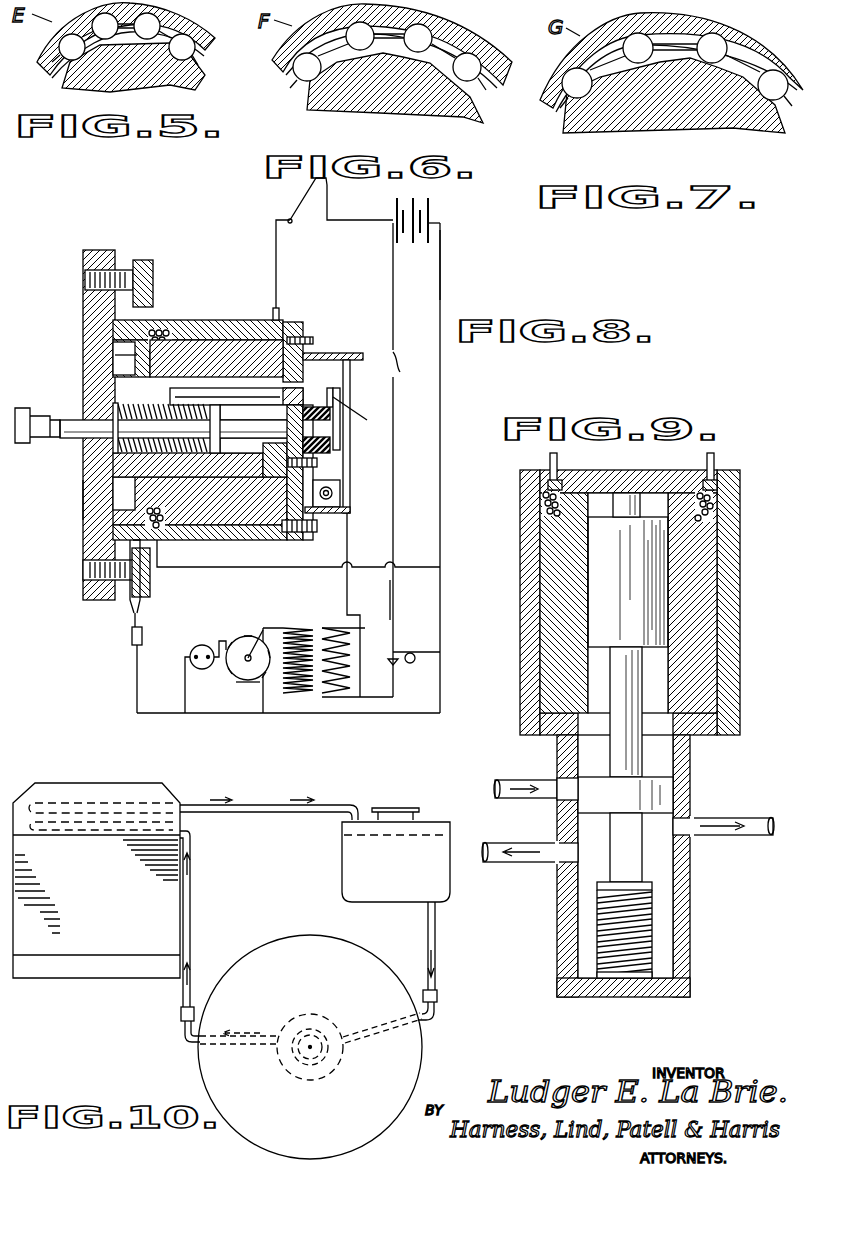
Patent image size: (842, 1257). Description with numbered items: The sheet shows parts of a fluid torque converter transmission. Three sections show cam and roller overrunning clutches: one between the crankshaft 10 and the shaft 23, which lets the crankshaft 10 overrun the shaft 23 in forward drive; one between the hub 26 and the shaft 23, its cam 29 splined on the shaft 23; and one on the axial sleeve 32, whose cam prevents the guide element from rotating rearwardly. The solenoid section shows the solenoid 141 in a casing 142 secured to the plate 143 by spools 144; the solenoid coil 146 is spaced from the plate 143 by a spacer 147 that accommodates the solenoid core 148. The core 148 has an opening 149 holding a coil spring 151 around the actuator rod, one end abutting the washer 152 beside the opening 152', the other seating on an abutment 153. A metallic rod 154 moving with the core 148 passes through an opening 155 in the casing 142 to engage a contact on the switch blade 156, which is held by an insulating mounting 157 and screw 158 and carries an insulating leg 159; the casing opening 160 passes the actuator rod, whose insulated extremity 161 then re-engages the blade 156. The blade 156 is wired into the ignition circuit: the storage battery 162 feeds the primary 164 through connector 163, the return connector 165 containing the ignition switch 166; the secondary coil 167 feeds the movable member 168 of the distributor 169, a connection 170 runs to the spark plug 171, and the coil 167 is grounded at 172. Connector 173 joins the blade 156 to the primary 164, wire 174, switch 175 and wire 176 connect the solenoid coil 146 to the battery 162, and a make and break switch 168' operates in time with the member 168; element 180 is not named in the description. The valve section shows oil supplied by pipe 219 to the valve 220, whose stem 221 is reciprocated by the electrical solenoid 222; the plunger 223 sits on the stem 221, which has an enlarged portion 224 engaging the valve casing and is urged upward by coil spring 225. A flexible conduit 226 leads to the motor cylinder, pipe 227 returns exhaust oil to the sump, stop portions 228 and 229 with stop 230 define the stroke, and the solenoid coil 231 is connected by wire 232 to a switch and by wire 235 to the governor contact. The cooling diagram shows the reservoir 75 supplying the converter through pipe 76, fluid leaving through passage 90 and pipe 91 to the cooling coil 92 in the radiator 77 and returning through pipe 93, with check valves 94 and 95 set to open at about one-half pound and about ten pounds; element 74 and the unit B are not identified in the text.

In FIG. 5, the crankshaft 10 is at (205, 28).
In FIG. 5, the shaft 23 is at (160, 84).
In FIG. 6, the hub 26 is at (283, 58).
In FIG. 7, the hub 26 is at (540, 58).
In FIG. 6, the cam 29 is at (372, 113).
In FIG. 7, the axial sleeve 32 is at (670, 128).
In FIG. 8, the solenoid 141 is at (210, 312).
In FIG. 8, the casing 142 is at (260, 326).
In FIG. 8, the plate 143 is at (104, 250).
In FIG. 8, the spools 144 is at (142, 260).
In FIG. 8, the solenoid coil 146 is at (190, 306).
In FIG. 8, the spacer 147 is at (135, 352).
In FIG. 8, the solenoid core 148 is at (82, 486).
In FIG. 8, the opening 149 is at (162, 441).
In FIG. 8, the coil spring 151 is at (173, 440).
In FIG. 8, the washer 152 is at (261, 412).
In FIG. 8, the opening 152' is at (261, 437).
In FIG. 8, the abutment 153 is at (216, 358).
In FIG. 8, the metallic rod 154 is at (188, 416).
In FIG. 8, the opening 155 is at (314, 356).
In FIG. 8, the switch blade 156 is at (350, 420).
In FIG. 8, the insulating mounting 157 is at (313, 495).
In FIG. 8, the screw 158 is at (285, 472).
In FIG. 8, the insulating leg 159 is at (312, 394).
In FIG. 8, the opening 160 is at (236, 396).
In FIG. 8, the insulated extremity 161 is at (340, 425).
In FIG. 8, the storage battery 162 is at (436, 218).
In FIG. 8, the connector 163 is at (442, 260).
In FIG. 8, the primary 164 is at (336, 626).
In FIG. 8, the return connector 165 is at (393, 530).
In FIG. 8, the ignition switch 166 is at (398, 378).
In FIG. 8, the secondary coil 167 is at (296, 695).
In FIG. 8, the movable member 168 is at (250, 640).
In FIG. 8, the make and break switch 168' is at (414, 646).
In FIG. 8, the distributor 169 is at (245, 684).
In FIG. 8, the connection 170 is at (218, 644).
In FIG. 8, the spark plug 171 is at (190, 654).
In FIG. 8, the ground 172 is at (130, 618).
In FIG. 8, the connector 173 is at (340, 560).
In FIG. 8, the wire 174 is at (283, 270).
In FIG. 8, the switch 175 is at (297, 198).
In FIG. 8, the wire 176 is at (378, 220).
In FIG. 8, the shaft 180 is at (64, 418).
In FIG. 9, the pipe 219 is at (540, 782).
In FIG. 9, the valve 220 is at (680, 882).
In FIG. 9, the stem 221 is at (645, 763).
In FIG. 9, the electrical solenoid 222 is at (730, 580).
In FIG. 9, the plunger 223 is at (604, 577).
In FIG. 9, the enlarged portion 224 is at (650, 796).
In FIG. 9, the coil spring 225 is at (640, 945).
In FIG. 9, the flexible conduit 226 is at (718, 818).
In FIG. 9, the pipe 227 is at (545, 864).
In FIG. 9, the stop portion 228 is at (622, 498).
In FIG. 9, the stop portion 229 is at (598, 896).
In FIG. 9, the stop 230 is at (625, 978).
In FIG. 9, the solenoid coil 231 is at (548, 538).
In FIG. 9, the wire 232 is at (550, 468).
In FIG. 9, the wire 235 is at (716, 470).
In FIG. 10, the pipe 74 is at (386, 1030).
In FIG. 10, the fluid reservoir 75 is at (396, 855).
In FIG. 10, the pipe 76 is at (426, 918).
In FIG. 10, the vehicle radiator 77 is at (100, 916).
In FIG. 10, the radially disposed passage 90 is at (228, 1048).
In FIG. 10, the pipe 91 is at (192, 922).
In FIG. 10, the cooling coil 92 is at (98, 803).
In FIG. 10, the pipe 93 is at (283, 805).
In FIG. 10, the check valve 94 is at (438, 994).
In FIG. 10, the check valve 95 is at (184, 1040).
In FIG. 10, the pump housing B is at (302, 934).